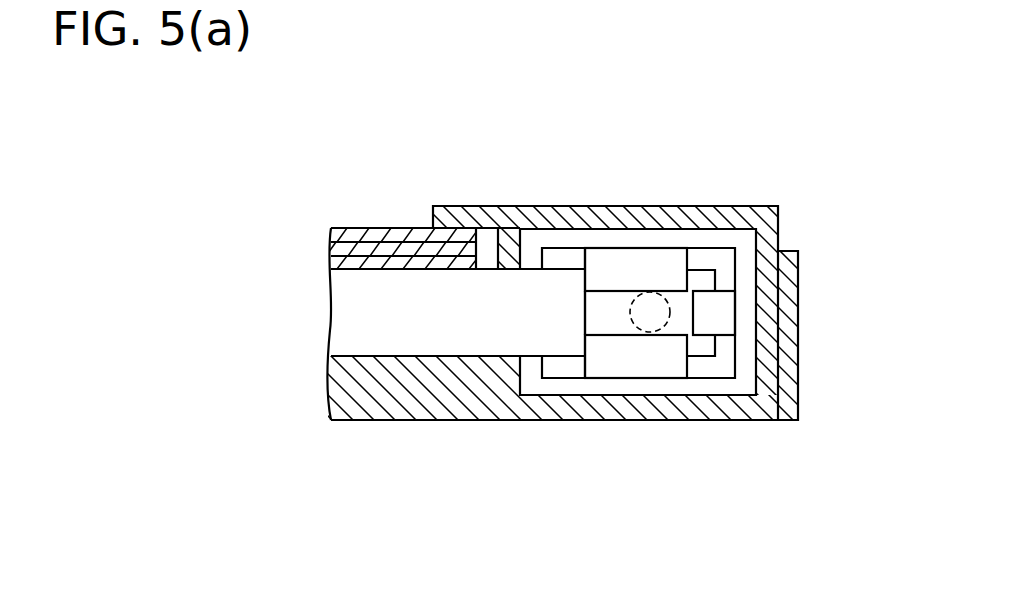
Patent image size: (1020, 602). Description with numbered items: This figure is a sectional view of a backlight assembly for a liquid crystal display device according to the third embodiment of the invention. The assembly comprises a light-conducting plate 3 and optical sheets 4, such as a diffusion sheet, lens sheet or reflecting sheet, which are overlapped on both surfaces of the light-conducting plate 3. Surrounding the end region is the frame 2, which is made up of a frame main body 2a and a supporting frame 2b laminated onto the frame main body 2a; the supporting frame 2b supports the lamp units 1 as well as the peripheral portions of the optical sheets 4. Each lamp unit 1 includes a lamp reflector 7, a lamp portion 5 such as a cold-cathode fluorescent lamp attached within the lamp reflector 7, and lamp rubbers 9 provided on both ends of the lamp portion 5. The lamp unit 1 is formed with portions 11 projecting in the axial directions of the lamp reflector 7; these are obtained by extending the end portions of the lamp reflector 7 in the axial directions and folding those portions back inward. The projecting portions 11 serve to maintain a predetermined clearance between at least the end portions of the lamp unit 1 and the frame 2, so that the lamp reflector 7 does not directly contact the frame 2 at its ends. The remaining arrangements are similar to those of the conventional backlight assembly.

The lamp unit 1 is at (702, 240).
The frame 2 is at (758, 107).
The frame main body 2a is at (792, 287).
The supporting frame 2b is at (733, 216).
The light-conducting plate 3 is at (368, 321).
The optical sheets 4 is at (372, 249).
The lamp portion 5 is at (652, 317).
The lamp reflector 7 is at (572, 258).
The lamp rubber 9 is at (602, 313).
The projecting portion 11 is at (640, 264).